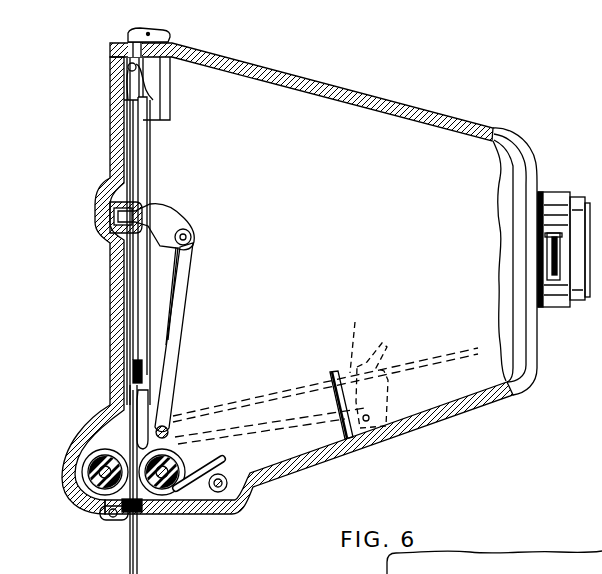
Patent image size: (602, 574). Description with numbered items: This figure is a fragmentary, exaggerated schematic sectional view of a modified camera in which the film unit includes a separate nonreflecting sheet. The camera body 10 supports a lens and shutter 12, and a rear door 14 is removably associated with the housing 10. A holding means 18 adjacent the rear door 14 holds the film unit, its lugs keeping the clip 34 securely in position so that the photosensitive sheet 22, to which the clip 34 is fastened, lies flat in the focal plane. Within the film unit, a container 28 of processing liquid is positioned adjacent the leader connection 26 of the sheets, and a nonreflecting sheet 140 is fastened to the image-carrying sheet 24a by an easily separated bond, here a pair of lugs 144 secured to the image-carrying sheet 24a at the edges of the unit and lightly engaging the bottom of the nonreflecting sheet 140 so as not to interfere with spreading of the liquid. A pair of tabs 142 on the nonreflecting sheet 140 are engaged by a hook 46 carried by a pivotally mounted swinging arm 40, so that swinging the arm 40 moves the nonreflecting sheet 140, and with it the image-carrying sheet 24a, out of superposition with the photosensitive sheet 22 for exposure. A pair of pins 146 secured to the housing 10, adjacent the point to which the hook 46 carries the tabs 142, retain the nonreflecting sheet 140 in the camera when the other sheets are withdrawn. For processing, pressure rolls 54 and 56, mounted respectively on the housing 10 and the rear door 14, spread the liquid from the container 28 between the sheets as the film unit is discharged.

The camera body 10 is at (410, 108).
The lens and shutter 12 is at (557, 307).
The rear door 14 is at (113, 280).
The holding means 18 is at (163, 80).
The photosensitive sheet 22 is at (133, 313).
The image-carrying sheet 24a is at (149, 156).
The leader connection 26 is at (138, 559).
The container 28 is at (143, 417).
The clip 34 is at (127, 84).
The arm 40 is at (178, 277).
The hook 46 is at (173, 220).
The pressure roll 54 is at (180, 487).
The pressure roll 56 is at (92, 485).
The nonreflecting sheet 140 is at (143, 128).
The tabs 142 is at (142, 212).
The lugs 144 is at (140, 367).
The pins 146 is at (332, 372).